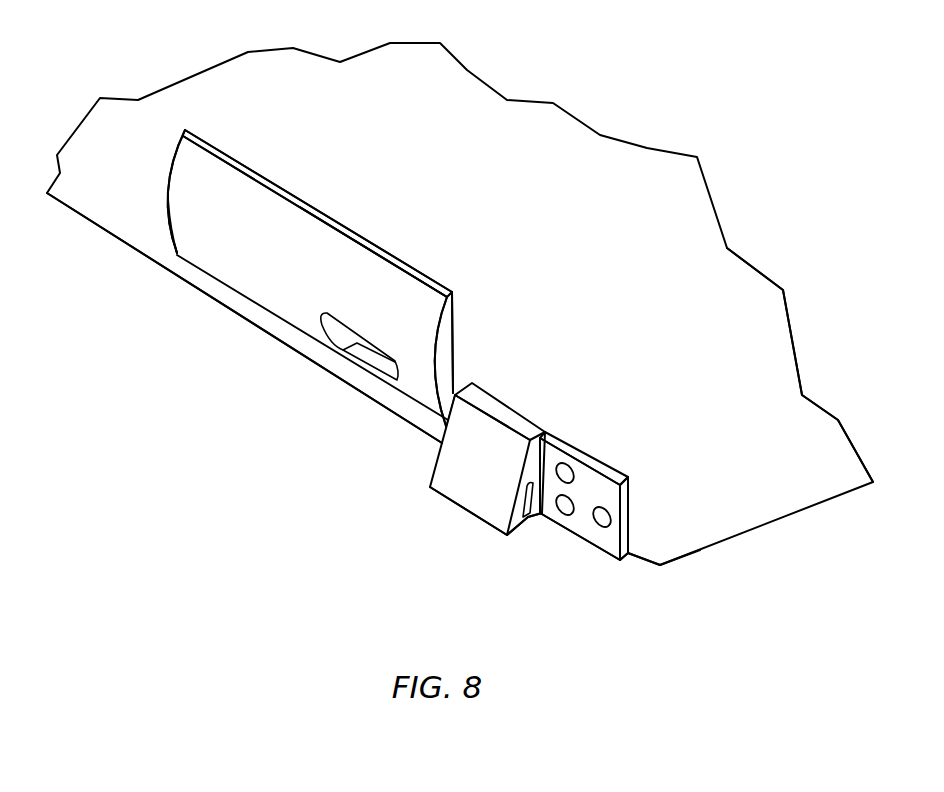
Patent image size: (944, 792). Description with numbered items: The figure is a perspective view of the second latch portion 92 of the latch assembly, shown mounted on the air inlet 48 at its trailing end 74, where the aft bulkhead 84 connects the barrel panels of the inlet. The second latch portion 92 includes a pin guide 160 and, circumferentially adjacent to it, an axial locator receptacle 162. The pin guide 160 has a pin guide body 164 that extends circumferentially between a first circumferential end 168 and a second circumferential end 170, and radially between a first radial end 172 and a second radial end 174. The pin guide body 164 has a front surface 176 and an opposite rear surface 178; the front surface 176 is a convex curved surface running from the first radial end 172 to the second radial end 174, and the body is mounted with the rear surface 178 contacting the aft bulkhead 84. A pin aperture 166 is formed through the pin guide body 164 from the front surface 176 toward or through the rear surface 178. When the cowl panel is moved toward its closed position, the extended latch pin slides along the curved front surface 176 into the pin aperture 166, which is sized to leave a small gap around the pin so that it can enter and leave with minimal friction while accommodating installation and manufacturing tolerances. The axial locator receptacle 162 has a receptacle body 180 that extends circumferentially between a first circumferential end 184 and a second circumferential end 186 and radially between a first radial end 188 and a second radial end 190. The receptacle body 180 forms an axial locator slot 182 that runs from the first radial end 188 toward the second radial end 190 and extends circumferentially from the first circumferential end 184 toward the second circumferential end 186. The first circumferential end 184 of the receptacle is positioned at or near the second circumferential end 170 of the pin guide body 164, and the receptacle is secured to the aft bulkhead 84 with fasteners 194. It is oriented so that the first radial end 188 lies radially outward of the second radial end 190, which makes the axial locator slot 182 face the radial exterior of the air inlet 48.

The air inlet 48 is at (758, 548).
The trailing end 74 is at (643, 560).
The aft bulkhead 84 is at (755, 417).
The second latch portion 92 is at (469, 192).
The pin guide 160 is at (232, 294).
The axial locator receptacle 162 is at (530, 411).
The pin guide body 164 is at (397, 297).
The pin aperture 166 is at (360, 358).
The first circumferential end 168 is at (170, 193).
The second circumferential end 170 is at (445, 347).
The first radial end 172 is at (257, 330).
The second radial end 174 is at (337, 220).
The front surface 176 is at (197, 217).
The rear surface 178 is at (455, 317).
The receptacle body 180 is at (560, 468).
The axial locator slot 182 is at (527, 542).
The first circumferential end 184 is at (425, 470).
The second circumferential end 186 is at (623, 518).
The first radial end 188 is at (488, 522).
The second radial end 190 is at (485, 405).
The fasteners 194 is at (593, 487).